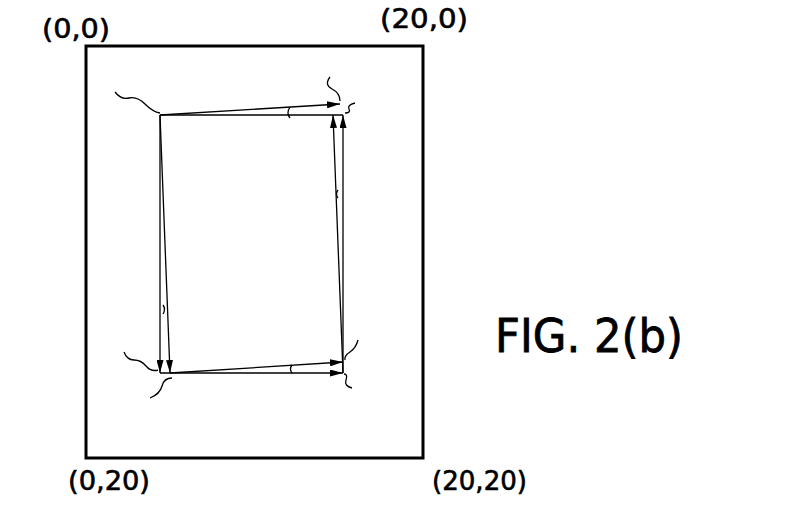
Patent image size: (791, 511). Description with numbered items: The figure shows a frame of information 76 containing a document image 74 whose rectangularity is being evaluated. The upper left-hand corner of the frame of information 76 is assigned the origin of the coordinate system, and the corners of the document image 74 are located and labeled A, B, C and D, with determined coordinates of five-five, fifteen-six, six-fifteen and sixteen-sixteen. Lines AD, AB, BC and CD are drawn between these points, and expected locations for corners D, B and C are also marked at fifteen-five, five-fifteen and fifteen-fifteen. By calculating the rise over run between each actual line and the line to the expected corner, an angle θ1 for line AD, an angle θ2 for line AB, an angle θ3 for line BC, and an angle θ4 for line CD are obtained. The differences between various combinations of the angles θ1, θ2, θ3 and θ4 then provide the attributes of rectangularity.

The document image 74 is at (256, 248).
The frame of information 76 is at (423, 172).
The angle θ 1 is at (292, 117).
The angle θ 2 is at (169, 310).
The angle θ 3 is at (294, 372).
The angle θ 4 is at (337, 185).